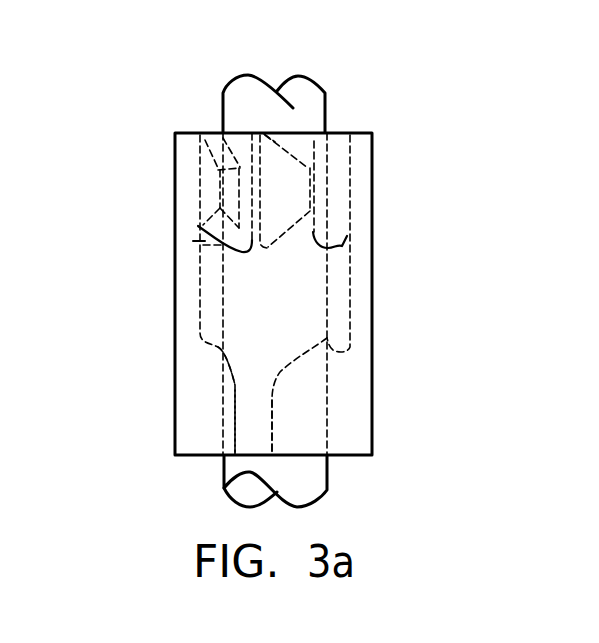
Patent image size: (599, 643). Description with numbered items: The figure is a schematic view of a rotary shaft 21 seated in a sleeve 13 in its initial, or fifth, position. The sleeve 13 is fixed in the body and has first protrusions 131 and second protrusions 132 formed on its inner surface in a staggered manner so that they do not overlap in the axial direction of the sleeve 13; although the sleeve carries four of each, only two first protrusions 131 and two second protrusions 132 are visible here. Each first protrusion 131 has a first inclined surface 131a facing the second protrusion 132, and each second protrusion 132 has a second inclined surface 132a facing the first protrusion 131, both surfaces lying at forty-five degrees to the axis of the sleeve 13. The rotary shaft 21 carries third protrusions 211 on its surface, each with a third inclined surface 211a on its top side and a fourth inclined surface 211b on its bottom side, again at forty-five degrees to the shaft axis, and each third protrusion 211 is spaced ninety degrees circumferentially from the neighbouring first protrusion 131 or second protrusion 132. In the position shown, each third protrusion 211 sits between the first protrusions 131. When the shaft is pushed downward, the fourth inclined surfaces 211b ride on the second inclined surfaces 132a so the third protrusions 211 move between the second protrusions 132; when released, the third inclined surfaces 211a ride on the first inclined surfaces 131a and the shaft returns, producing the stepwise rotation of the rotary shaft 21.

The sleeve 13 is at (188, 293).
The first protrusion 131 is at (207, 178).
The first inclined surface 131a is at (200, 236).
The second protrusion 132 is at (300, 416).
The second inclined surface 132a is at (290, 363).
The rotary shaft 21 is at (300, 121).
The third protrusion 211 is at (288, 188).
The third inclined surface 211a is at (288, 142).
The fourth inclined surface 211b is at (288, 228).